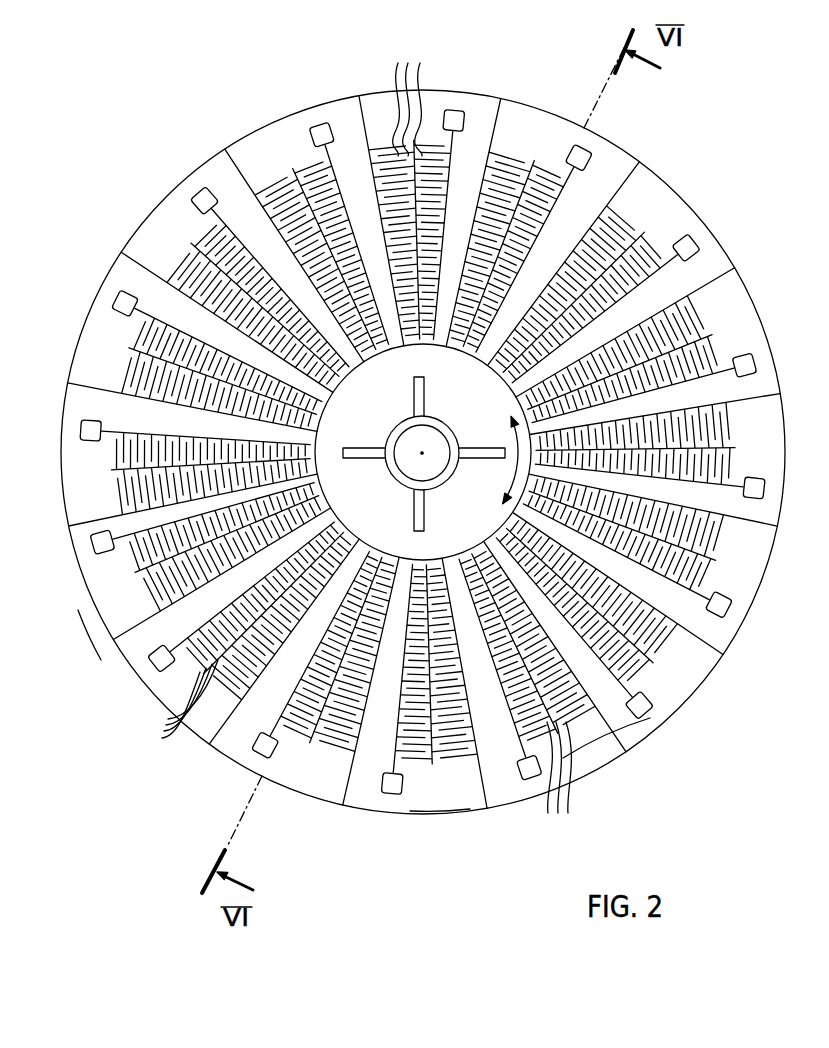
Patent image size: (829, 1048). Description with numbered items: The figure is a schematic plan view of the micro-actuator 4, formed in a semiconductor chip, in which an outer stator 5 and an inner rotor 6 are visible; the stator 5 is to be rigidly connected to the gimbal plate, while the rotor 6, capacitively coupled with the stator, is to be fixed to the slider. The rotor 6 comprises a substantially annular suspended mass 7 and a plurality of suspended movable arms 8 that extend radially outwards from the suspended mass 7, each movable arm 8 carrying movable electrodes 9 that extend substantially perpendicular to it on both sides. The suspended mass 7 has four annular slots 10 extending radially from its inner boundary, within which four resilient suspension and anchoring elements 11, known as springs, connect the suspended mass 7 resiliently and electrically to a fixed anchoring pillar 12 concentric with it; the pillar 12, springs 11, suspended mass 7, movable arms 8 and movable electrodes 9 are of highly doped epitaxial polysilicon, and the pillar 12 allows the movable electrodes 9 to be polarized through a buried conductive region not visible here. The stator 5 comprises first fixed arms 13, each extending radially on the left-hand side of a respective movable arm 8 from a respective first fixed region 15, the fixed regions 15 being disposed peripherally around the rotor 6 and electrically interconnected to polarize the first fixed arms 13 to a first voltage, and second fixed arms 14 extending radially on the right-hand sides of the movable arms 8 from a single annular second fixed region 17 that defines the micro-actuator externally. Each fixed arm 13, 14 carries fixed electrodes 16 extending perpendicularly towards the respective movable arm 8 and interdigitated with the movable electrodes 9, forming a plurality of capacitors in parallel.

The micro-actuator 4 is at (113, 713).
The outer stator 5 is at (612, 780).
The inner rotor 6 is at (166, 233).
The suspended mass 7 is at (235, 432).
The movable arms 8 is at (386, 433).
The movable electrodes 9 is at (358, 437).
The annular slots 10 is at (430, 394).
The resilient suspension and anchoring elements 11 is at (414, 395).
The anchoring pillar 12 is at (410, 466).
The first fixed arms 13 is at (337, 115).
The second fixed arms 14 is at (500, 127).
The first fixed regions 15 is at (318, 120).
The fixed electrodes 16 is at (250, 240).
The second fixed region 17 is at (442, 812).